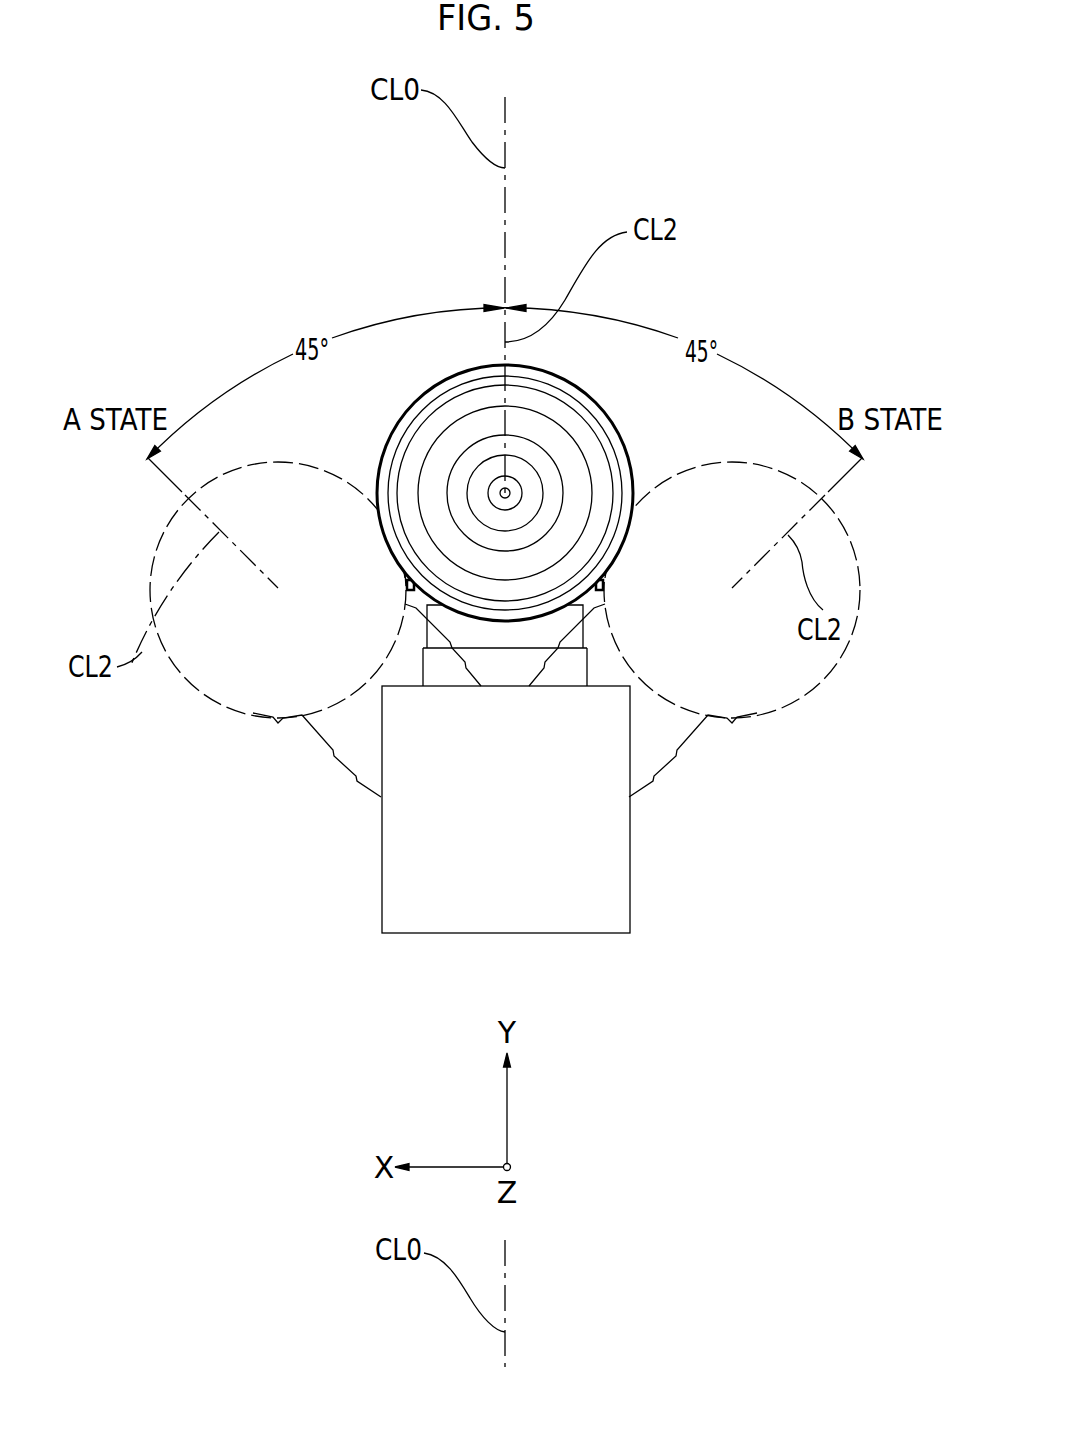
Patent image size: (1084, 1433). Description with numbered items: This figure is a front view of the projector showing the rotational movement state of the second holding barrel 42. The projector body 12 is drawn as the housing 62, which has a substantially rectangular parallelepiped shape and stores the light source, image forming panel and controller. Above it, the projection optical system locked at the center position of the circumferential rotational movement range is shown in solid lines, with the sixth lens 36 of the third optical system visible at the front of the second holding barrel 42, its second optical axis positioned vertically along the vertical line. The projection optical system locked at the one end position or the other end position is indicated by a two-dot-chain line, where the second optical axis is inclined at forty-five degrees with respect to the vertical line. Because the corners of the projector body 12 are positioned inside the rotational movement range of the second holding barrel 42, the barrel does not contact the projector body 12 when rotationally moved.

The projector body 12 is at (505, 657).
The sixth lens 36 is at (440, 457).
The second holding barrel 42 is at (427, 392).
The housing 62 is at (631, 897).